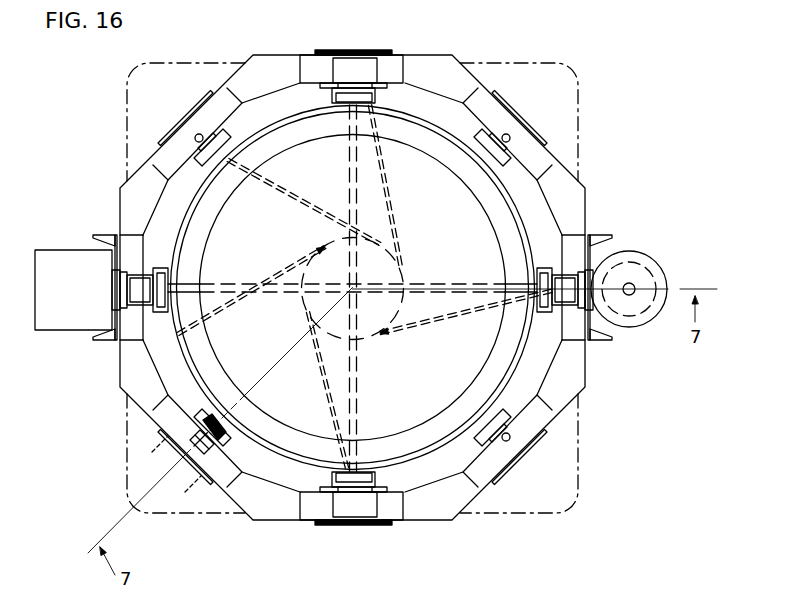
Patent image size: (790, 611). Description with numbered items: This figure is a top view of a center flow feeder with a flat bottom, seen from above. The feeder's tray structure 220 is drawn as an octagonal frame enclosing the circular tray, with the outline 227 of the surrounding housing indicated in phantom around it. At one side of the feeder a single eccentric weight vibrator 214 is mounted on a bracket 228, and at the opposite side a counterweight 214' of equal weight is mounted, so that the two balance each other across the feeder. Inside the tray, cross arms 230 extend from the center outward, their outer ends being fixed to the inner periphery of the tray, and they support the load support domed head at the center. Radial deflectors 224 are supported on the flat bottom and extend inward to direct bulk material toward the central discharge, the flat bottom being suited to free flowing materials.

The octagonal frame 220 is at (410, 484).
The radial deflectors 224 is at (283, 190).
The cross arms 230 is at (419, 283).
The mounting bracket 228 is at (590, 240).
The single eccentric weight vibrator 214 is at (629, 308).
The counterweight 214' is at (76, 303).
The housing outline 227 is at (394, 288).